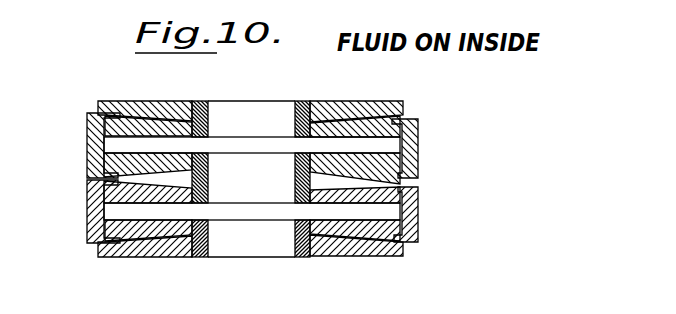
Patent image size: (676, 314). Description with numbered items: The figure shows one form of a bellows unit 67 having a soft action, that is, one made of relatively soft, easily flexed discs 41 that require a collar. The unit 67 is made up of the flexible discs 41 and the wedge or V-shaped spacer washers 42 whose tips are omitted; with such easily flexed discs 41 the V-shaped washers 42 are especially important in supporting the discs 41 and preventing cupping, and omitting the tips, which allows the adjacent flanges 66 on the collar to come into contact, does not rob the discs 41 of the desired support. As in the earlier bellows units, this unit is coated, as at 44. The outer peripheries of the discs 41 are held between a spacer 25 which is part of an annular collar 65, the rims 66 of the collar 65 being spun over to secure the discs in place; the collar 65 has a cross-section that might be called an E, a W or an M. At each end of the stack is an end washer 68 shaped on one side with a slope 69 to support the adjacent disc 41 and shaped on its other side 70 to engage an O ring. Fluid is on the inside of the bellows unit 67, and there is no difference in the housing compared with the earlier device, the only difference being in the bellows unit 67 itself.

The spacer 25 is at (398, 147).
The flexible disc 41 is at (107, 162).
The V-shaped spacer washer 42 is at (295, 175).
The coating 44 is at (306, 240).
The annular collar 65 is at (414, 141).
The rim 66 is at (406, 118).
The bellows unit 67 is at (233, 236).
The end washer 68 is at (140, 101).
The slope 69 is at (119, 113).
The other side of end washer 70 is at (342, 101).